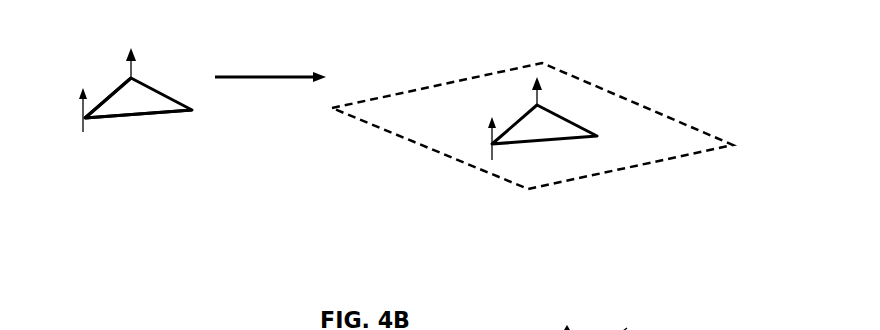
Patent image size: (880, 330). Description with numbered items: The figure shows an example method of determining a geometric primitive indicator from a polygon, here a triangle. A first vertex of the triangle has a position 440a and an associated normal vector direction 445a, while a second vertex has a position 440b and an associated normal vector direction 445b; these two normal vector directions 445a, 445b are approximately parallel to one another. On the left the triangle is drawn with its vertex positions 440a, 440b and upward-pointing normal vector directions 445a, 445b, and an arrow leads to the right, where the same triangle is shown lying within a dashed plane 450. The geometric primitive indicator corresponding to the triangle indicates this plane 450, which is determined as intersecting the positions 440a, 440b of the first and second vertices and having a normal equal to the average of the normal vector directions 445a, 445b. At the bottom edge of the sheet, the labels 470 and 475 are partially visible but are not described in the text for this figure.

The position of first vertex 440a is at (90, 122).
The position of second vertex 440b is at (131, 78).
The normal vector direction of first vertex 445a is at (83, 102).
The normal vector direction of second vertex 445b is at (127, 52).
The plane 450 is at (567, 90).
The vector 470 is at (567, 318).
The vector 475 is at (639, 322).